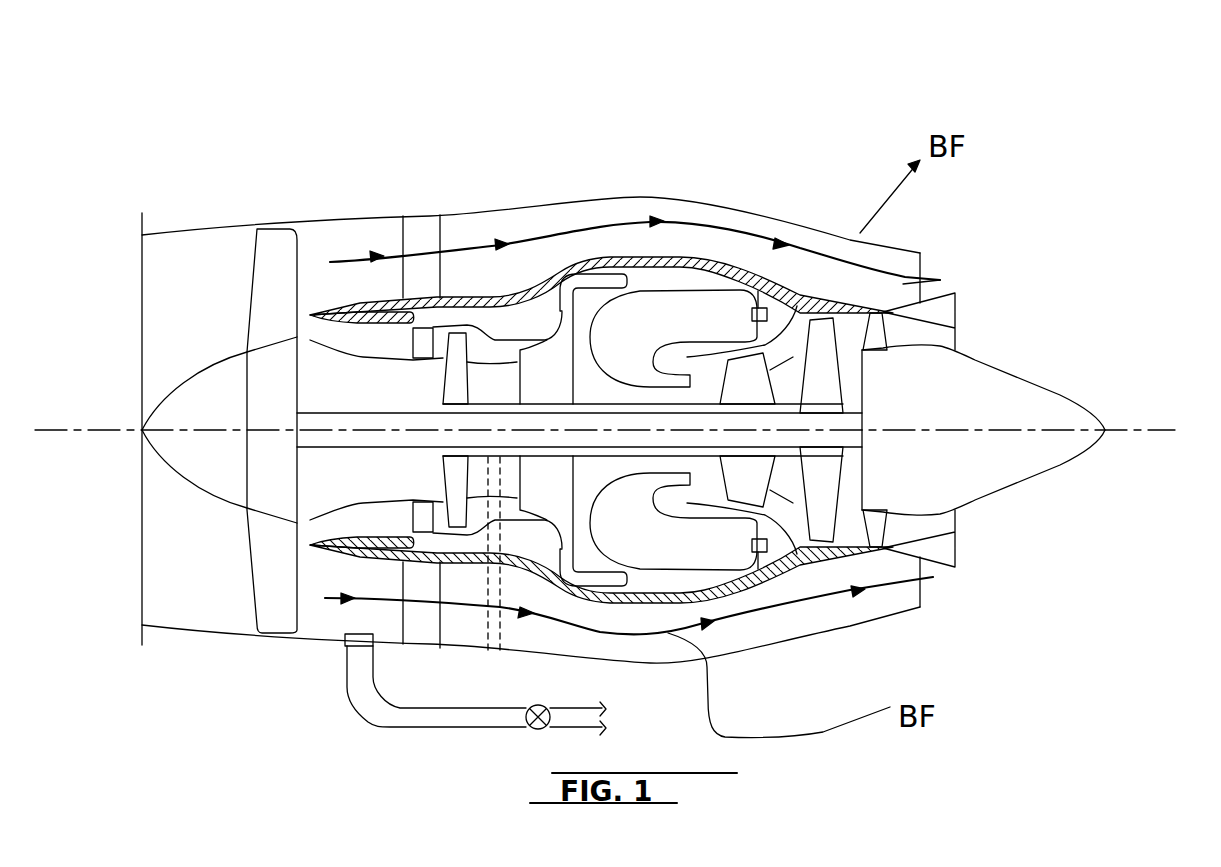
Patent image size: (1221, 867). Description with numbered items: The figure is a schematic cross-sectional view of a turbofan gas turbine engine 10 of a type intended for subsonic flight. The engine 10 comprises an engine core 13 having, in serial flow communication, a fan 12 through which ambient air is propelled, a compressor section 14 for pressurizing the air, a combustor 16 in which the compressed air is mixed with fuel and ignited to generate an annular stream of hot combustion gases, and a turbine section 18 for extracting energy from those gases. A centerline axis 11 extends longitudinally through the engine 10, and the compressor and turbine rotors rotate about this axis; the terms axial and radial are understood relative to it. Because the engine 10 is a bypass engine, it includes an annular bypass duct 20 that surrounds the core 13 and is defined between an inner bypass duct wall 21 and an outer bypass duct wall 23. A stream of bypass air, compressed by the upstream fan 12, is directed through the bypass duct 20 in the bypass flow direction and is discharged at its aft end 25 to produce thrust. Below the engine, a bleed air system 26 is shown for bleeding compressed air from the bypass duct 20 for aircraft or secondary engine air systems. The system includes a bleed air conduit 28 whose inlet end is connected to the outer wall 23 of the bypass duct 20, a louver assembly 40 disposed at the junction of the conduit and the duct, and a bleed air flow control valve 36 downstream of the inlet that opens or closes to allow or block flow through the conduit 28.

The turbofan gas turbine engine 10 is at (805, 152).
The centerline axis 11 is at (1140, 428).
The fan 12 is at (268, 563).
The engine core 13 is at (689, 240).
The compressor section 14 is at (487, 345).
The combustor 16 is at (673, 307).
The turbine section 18 is at (787, 487).
The annular bypass duct 20 is at (538, 205).
The inner bypass duct wall 21 is at (348, 306).
The outer bypass duct wall 23 is at (347, 220).
The aft end 25 is at (908, 288).
The bleed air system 26 is at (419, 714).
The bleed air conduit 28 is at (476, 722).
The bleed air flow control valve 36 is at (537, 730).
The louver assembly 40 is at (336, 649).